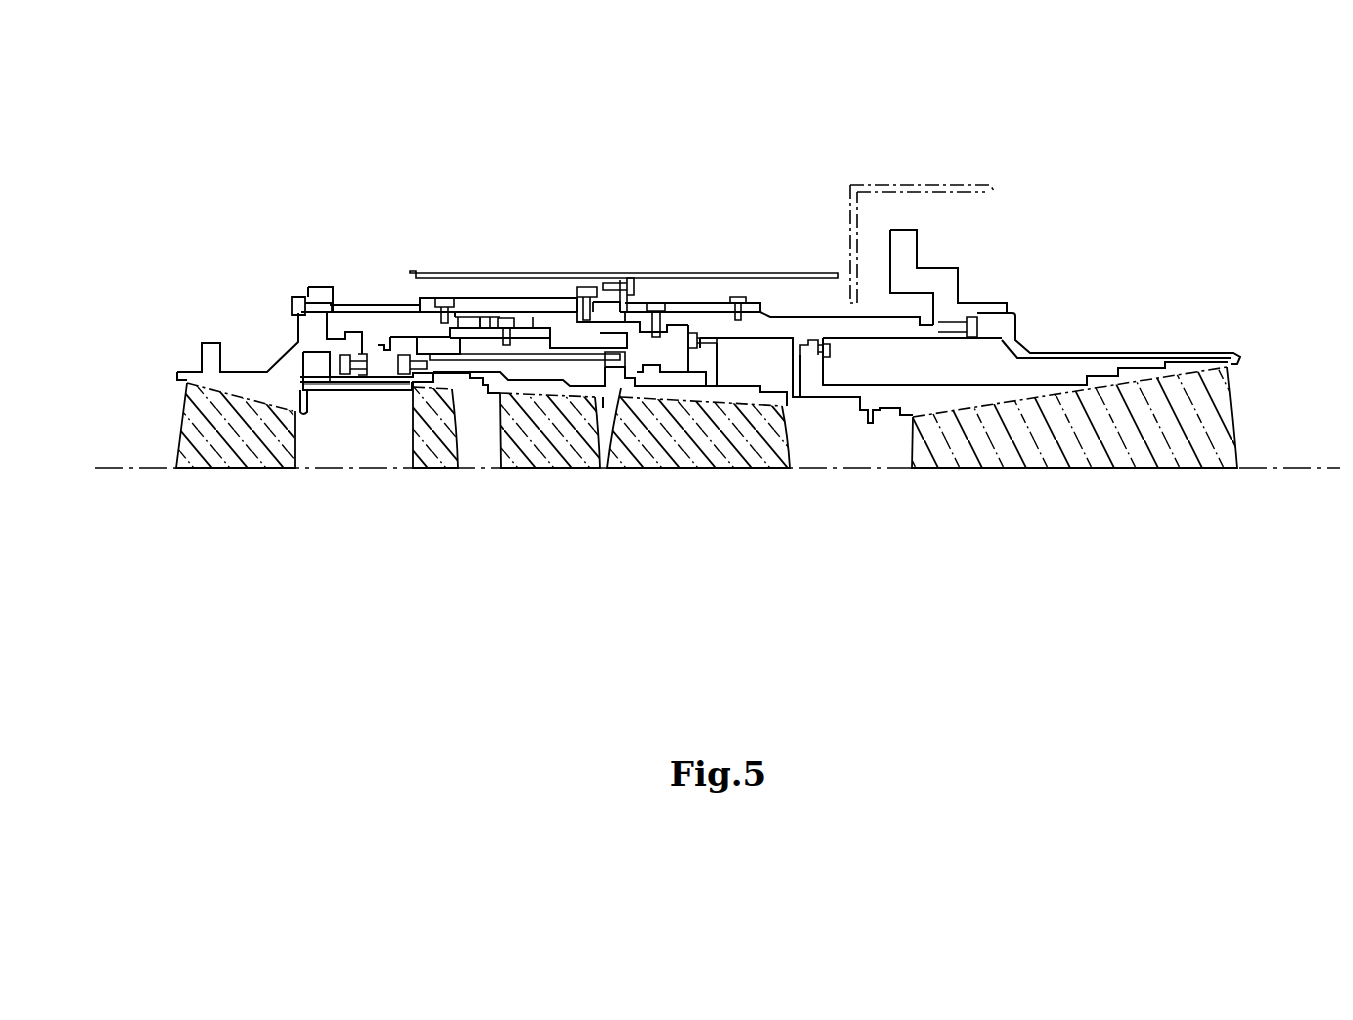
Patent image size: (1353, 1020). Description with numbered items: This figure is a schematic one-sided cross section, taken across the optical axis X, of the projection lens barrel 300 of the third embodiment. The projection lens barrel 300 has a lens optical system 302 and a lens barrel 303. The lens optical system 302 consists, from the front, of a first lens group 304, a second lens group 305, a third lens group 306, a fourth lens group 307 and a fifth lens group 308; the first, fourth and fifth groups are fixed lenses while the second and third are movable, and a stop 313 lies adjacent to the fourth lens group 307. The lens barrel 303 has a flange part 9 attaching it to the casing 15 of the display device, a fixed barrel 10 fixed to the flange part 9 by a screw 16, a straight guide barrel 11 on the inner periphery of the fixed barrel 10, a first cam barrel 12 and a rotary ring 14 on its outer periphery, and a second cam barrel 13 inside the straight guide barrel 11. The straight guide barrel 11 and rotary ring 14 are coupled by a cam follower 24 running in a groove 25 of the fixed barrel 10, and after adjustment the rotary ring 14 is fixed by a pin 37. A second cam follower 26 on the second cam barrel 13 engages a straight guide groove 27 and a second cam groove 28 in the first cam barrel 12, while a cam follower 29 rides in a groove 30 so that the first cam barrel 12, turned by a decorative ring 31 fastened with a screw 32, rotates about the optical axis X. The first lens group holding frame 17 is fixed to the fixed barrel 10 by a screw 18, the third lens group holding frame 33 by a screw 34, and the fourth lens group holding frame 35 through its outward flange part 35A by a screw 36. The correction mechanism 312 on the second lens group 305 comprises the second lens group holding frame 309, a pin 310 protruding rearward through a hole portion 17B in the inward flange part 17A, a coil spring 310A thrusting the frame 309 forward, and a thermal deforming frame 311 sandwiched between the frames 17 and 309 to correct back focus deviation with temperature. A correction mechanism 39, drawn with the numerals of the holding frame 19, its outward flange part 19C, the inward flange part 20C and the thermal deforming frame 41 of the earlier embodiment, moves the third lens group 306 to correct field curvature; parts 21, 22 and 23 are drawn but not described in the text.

The projection lens barrel 300 is at (320, 165).
The lens optical system 302 is at (903, 630).
The lens barrel 303 is at (548, 168).
The first lens group 304 is at (252, 470).
The second lens group 305 is at (430, 478).
The third lens group 306 is at (532, 478).
The fourth lens group 307 is at (688, 478).
The fifth lens group 308 is at (1040, 478).
The second lens group holding frame 309 is at (338, 390).
The pin 310 is at (352, 390).
The coil spring 310A is at (347, 390).
The thermal deforming frame 311 is at (372, 390).
The correction mechanism 312 is at (373, 424).
The stop 313 is at (893, 420).
The flange part 9 is at (925, 243).
The fixed barrel 10 is at (790, 335).
The straight guide barrel 11 is at (545, 330).
The first cam barrel 12 is at (503, 292).
The second cam barrel 13 is at (388, 343).
The rotary ring 14 is at (690, 310).
The casing 15 is at (893, 185).
The screw 16 is at (972, 318).
The first lens group holding frame 17 is at (243, 360).
The flange part 17A is at (357, 350).
The hole portion 17B is at (345, 355).
The screw 18 is at (290, 300).
The second lens group holding frame 19 is at (468, 395).
The flange part 19C is at (437, 384).
The flange part 20C is at (637, 368).
The bolt 21 is at (512, 322).
The spacer 22 is at (493, 318).
The spacer 23 is at (528, 330).
The cam follower 24 is at (665, 322).
The groove 25 is at (641, 302).
The second cam follower 26 is at (462, 305).
The straight guide groove 27 is at (415, 340).
The second cam groove 28 is at (435, 298).
The cam follower 29 is at (603, 312).
The groove 30 is at (577, 290).
The decorative ring 31 is at (715, 288).
The screw 32 is at (628, 287).
The third lens group holding frame 33 is at (800, 397).
The screw 34 is at (690, 338).
The fourth lens group holding frame 35 is at (880, 420).
The flange part 35A is at (797, 380).
The screw 36 is at (833, 340).
The pin 37 is at (737, 305).
The correction mechanism 39 is at (576, 369).
The thermal deforming frame 41 is at (548, 358).
The optical axis X is at (112, 468).